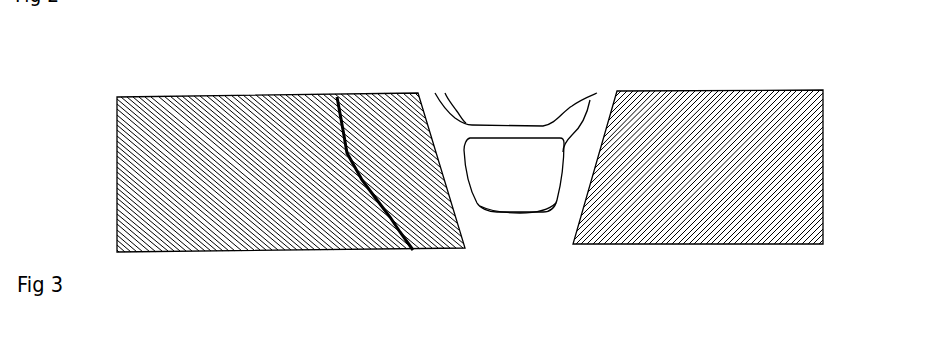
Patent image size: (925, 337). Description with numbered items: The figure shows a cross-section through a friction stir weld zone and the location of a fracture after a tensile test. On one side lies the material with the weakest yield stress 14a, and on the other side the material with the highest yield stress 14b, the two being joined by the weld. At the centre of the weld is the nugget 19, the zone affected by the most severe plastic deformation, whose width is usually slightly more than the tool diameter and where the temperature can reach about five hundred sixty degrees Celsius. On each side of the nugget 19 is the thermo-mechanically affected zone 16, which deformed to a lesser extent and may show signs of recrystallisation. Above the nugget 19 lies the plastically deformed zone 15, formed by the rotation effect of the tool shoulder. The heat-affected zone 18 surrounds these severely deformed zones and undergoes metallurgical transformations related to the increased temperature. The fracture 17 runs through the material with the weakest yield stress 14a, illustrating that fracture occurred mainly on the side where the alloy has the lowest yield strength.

The material with the weakest yield stress 14a is at (238, 178).
The material with the highest yield stress 14b is at (703, 130).
The plastically deformed zone 15 is at (495, 110).
The thermo-mechanically affected zone 16 is at (563, 127).
The fracture 17 is at (388, 215).
The heat-affected zone 18 is at (497, 207).
The nugget 19 is at (530, 195).